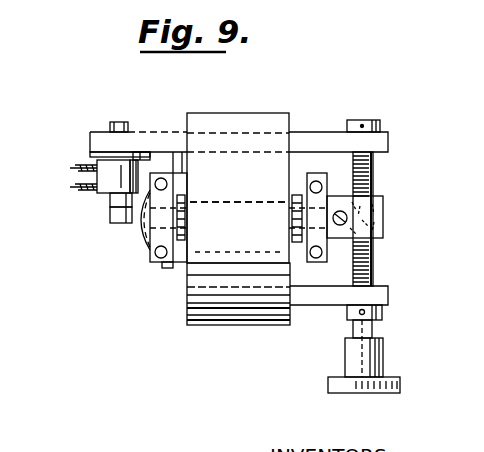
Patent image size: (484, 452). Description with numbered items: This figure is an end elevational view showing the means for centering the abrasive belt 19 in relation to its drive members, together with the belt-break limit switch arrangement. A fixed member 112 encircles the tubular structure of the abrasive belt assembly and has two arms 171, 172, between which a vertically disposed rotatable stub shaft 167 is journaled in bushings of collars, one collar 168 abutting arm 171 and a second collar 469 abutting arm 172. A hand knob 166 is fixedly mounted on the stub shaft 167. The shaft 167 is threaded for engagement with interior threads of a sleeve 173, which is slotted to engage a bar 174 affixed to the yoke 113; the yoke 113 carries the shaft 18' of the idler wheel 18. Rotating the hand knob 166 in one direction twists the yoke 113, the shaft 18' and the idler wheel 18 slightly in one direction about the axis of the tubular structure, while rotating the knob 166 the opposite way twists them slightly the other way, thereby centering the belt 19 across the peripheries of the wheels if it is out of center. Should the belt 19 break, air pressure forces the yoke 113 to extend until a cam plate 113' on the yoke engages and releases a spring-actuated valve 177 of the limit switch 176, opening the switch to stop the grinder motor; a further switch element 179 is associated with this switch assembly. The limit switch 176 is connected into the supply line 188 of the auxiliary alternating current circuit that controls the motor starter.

The abrasive belt 19 is at (262, 120).
The fixed member 112 is at (176, 131).
The arm 171 is at (303, 140).
The collar 168 is at (396, 113).
The sleeve 173 is at (370, 194).
The bar 174 is at (371, 259).
The shaft of idler wheel 18' is at (238, 187).
The limit switch 176 is at (116, 172).
The supply line 188 is at (75, 168).
The spring-actuated valve 177 is at (122, 207).
The switch actuator 179 is at (120, 226).
The cam plate 113' is at (116, 234).
The yoke 113 is at (153, 238).
The idler wheel 18 is at (211, 310).
The arm 172 is at (316, 298).
The nut 469 is at (372, 322).
The stub shaft 167 is at (352, 331).
The hand knob 166 is at (343, 388).